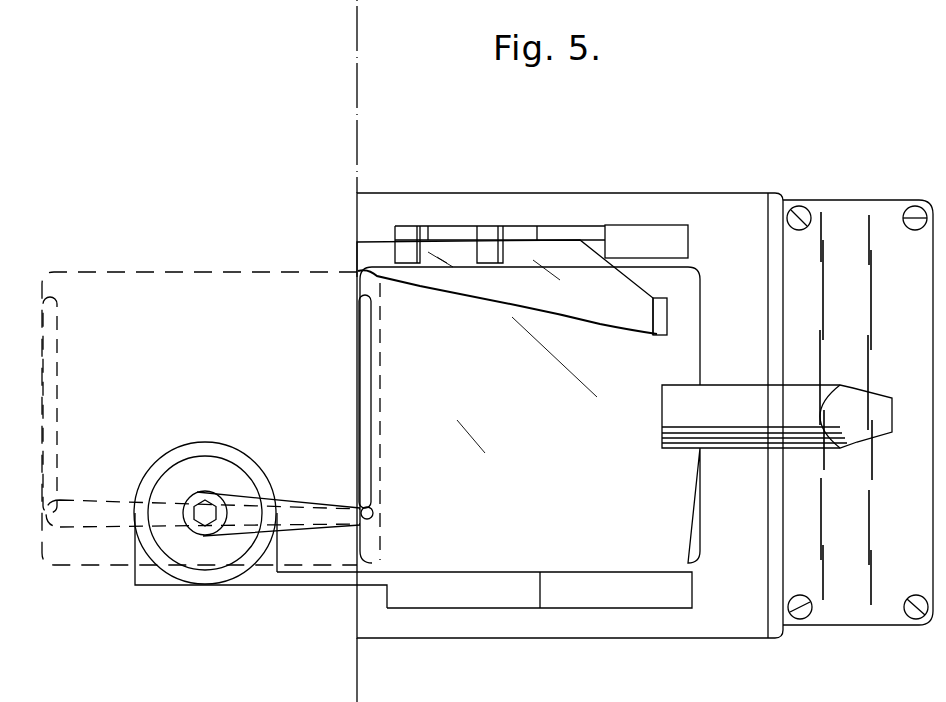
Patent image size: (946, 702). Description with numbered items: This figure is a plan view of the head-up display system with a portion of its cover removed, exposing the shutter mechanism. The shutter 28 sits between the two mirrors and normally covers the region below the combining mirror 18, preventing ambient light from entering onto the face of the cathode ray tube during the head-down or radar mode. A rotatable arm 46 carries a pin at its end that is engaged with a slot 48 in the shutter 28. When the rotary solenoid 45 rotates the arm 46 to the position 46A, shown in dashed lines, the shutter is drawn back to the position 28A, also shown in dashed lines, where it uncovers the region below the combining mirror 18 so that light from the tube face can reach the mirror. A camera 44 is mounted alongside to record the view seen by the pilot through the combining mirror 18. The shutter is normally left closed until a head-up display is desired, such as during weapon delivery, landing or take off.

The combining mirror 18 is at (605, 257).
The shutter 28 is at (400, 553).
The shutter position 28A is at (147, 272).
The camera 44 is at (750, 395).
The rotary solenoid 45 is at (247, 450).
The rotatable arm 46 is at (282, 507).
The arm position 46A is at (87, 500).
The slot 48 is at (363, 333).